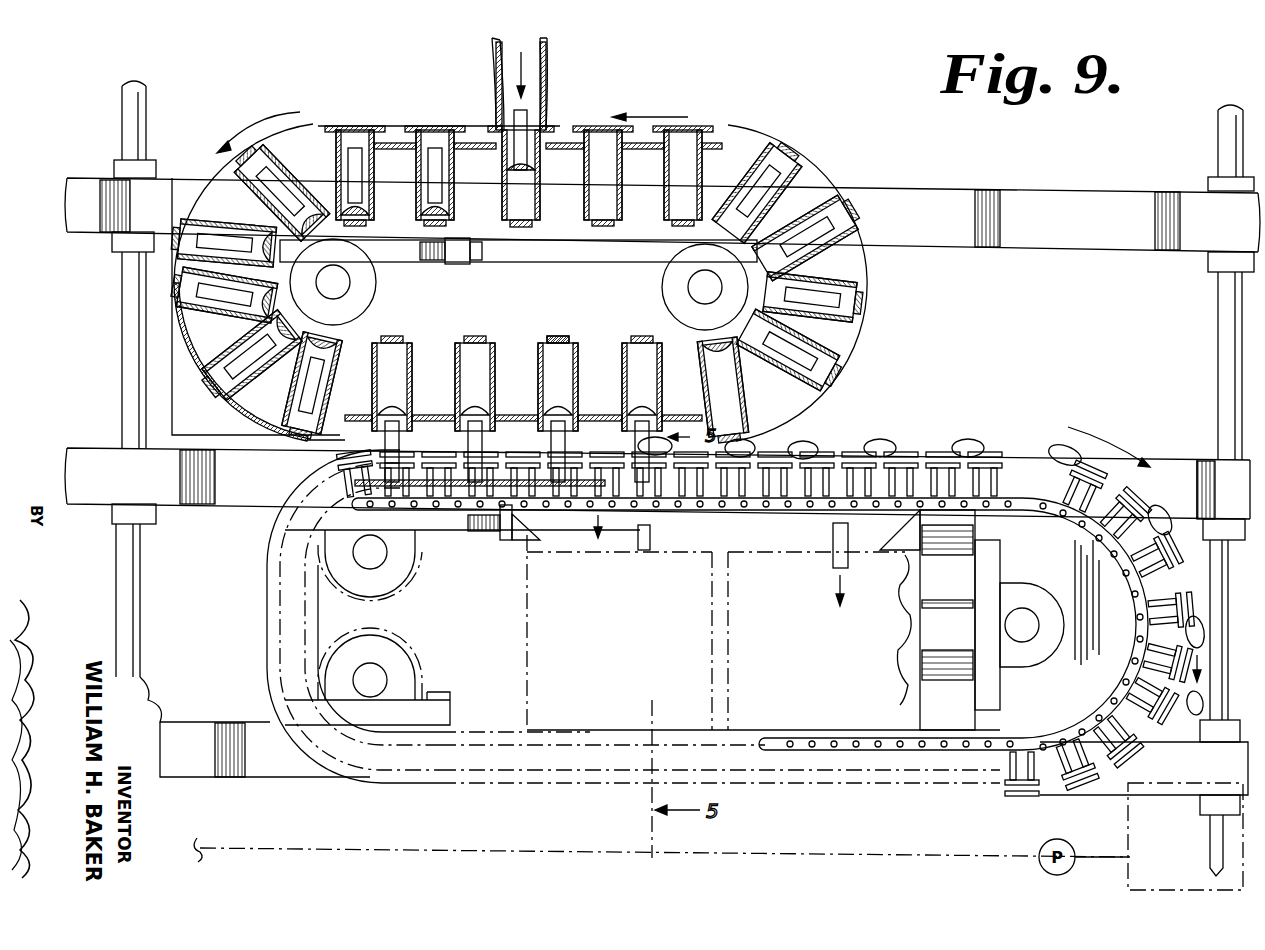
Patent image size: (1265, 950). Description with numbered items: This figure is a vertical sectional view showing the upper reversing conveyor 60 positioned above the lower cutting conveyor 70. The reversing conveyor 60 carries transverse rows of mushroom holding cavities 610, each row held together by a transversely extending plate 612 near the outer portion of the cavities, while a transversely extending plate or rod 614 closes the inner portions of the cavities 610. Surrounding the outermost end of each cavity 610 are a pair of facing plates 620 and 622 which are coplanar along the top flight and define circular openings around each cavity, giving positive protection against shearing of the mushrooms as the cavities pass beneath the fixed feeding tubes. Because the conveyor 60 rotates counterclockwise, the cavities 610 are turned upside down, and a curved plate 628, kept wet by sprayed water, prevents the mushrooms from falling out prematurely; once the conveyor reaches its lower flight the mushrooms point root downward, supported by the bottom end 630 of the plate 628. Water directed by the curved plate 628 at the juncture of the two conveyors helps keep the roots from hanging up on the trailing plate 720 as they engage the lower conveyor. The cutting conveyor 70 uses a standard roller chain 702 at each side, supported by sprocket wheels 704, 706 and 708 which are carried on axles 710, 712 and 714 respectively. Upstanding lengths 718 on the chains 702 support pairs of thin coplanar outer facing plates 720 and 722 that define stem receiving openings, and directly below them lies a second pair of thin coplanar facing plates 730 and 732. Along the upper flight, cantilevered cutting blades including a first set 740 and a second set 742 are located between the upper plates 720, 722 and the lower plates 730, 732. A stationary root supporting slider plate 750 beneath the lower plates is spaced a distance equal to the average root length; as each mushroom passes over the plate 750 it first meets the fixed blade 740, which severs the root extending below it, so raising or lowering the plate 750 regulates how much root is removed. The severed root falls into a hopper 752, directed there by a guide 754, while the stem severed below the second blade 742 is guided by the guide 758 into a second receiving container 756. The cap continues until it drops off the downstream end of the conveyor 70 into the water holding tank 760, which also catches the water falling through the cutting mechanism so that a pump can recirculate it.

The upper reversing conveyor 60 is at (97, 359).
The lower cutting conveyor 70 is at (186, 788).
The mushroom holding cavity 610 is at (418, 182).
The transversely extending plate 612 is at (562, 165).
The transversely extending plate or rod 614 is at (524, 228).
The facing plate 620 is at (557, 175).
The facing plate 622 is at (496, 112).
The curved plate 628 is at (152, 300).
The bottom end of the plate 630 is at (247, 530).
The roller chain 702 is at (448, 515).
The sprocket wheel 704 is at (385, 592).
The sprocket wheel 706 is at (326, 655).
The sprocket wheel 708 is at (903, 607).
The axle 710 is at (378, 556).
The axle 712 is at (378, 677).
The axle 714 is at (1032, 627).
The upstanding length 718 is at (902, 478).
The outer facing plate 720 is at (803, 441).
The outer facing plate 722 is at (858, 455).
The lower facing plate 730 is at (867, 455).
The lower facing plate 732 is at (918, 452).
The first set of cutting blades 740 is at (637, 444).
The second set of cutting blades 742 is at (792, 441).
The root supporting slider plate 750 is at (583, 488).
The hopper 752 is at (528, 668).
The guide 754 is at (512, 545).
The second receiving container 756 is at (730, 662).
The guide 758 is at (918, 516).
The water holding tank 760 is at (1128, 805).